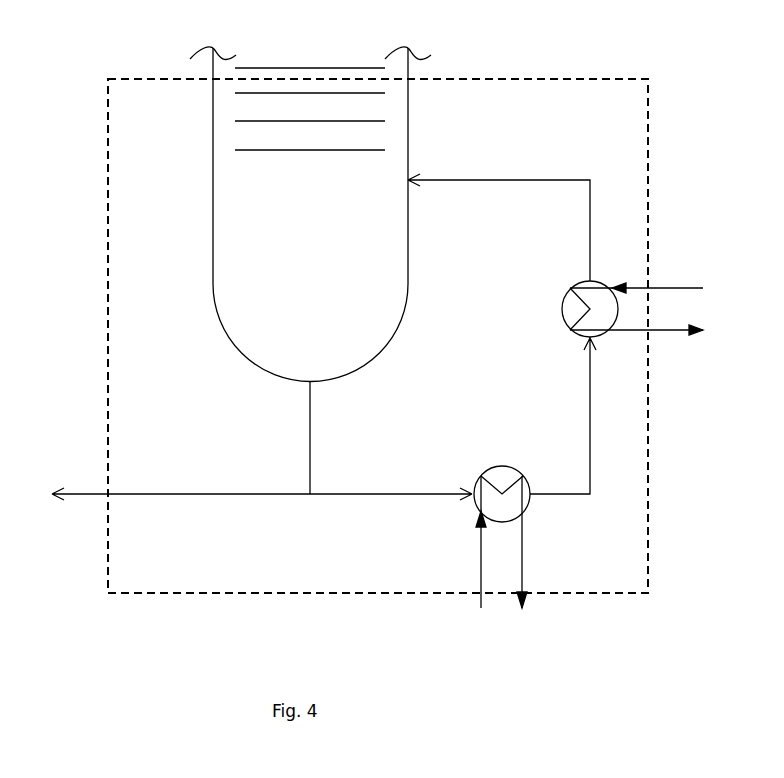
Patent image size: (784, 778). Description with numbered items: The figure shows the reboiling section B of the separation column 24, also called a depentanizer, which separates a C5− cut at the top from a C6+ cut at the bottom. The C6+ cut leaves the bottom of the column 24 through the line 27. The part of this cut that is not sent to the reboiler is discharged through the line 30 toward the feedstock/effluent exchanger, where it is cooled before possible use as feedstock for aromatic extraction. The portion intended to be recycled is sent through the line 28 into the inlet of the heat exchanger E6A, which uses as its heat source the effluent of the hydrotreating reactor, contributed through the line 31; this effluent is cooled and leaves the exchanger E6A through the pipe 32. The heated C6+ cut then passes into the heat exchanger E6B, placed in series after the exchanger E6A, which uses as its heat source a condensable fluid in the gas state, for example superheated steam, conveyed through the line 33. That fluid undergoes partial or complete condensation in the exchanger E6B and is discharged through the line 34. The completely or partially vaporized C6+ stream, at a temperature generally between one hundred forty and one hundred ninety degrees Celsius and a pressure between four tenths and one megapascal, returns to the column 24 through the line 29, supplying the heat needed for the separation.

The reboiling section B is at (648, 153).
The separation column 24 is at (408, 131).
The line 27 is at (310, 425).
The line 28 is at (393, 494).
The line 29 is at (512, 180).
The line 30 is at (193, 494).
The line 31 is at (478, 572).
The pipe 32 is at (524, 580).
The line 33 is at (673, 286).
The line 34 is at (680, 333).
The heat exchanger E6A is at (500, 466).
The heat exchanger E6B is at (565, 302).